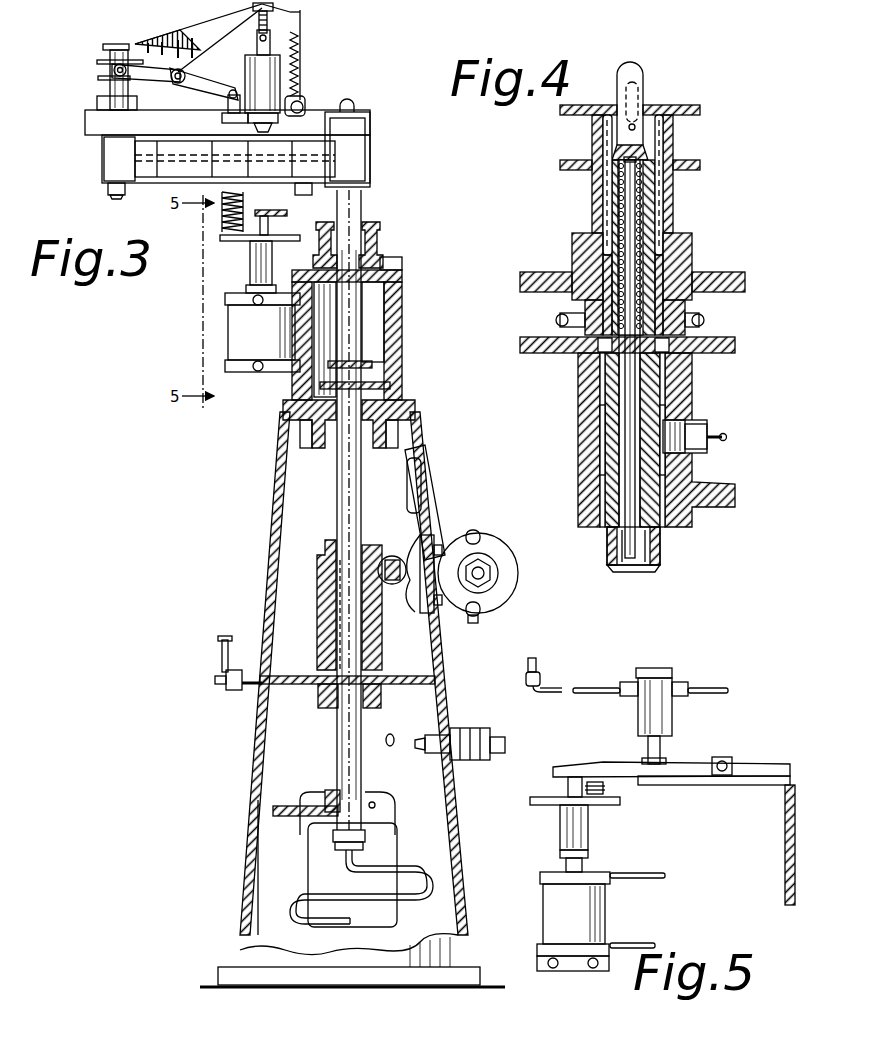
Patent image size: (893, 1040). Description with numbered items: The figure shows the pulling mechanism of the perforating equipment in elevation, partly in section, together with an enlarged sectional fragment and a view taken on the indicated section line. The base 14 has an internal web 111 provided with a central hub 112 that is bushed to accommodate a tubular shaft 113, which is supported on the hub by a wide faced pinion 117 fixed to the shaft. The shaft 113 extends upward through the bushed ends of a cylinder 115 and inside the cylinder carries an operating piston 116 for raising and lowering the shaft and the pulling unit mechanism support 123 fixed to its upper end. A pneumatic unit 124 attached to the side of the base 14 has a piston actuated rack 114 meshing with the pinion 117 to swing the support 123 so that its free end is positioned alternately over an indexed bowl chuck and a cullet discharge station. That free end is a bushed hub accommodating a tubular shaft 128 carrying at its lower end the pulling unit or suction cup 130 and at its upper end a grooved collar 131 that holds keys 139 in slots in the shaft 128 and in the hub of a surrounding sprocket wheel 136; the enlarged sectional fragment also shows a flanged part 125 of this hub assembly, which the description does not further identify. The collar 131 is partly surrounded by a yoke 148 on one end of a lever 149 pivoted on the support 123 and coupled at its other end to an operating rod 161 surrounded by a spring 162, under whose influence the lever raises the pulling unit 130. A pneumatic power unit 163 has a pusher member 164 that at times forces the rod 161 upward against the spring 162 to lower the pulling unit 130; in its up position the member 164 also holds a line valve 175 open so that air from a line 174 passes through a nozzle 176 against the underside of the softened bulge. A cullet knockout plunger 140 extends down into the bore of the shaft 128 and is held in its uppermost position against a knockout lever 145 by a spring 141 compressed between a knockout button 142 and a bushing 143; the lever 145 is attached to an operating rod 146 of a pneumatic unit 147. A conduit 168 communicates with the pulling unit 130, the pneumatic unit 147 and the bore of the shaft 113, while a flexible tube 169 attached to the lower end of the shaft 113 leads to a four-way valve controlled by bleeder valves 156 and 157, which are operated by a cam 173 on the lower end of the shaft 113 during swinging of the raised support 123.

In FIG. 3, the base 14 is at (232, 966).
In FIG. 3, the internal web 111 is at (300, 656).
In FIG. 3, the central hub 112 is at (320, 700).
In FIG. 3, the tubular shaft 113 is at (337, 494).
In FIG. 3, the piston actuated rack 114 is at (394, 556).
In FIG. 3, the cylinder 115 is at (392, 298).
In FIG. 3, the operating piston 116 is at (380, 365).
In FIG. 3, the wide faced pinion 117 is at (317, 619).
In FIG. 3, the pulling unit mechanism support 123 is at (345, 165).
In FIG. 3, the pneumatic unit 124 is at (510, 600).
In FIG. 4, the flange 125 is at (702, 276).
In FIG. 3, the tubular shaft 128 is at (105, 88).
In FIG. 4, the tubular shaft 128 is at (606, 440).
In FIG. 3, the pulling unit or suction cup 130 is at (110, 192).
In FIG. 4, the pulling unit or suction cup 130 is at (645, 568).
In FIG. 3, the grooved collar 131 is at (132, 80).
In FIG. 4, the grooved collar 131 is at (665, 108).
In FIG. 4, the sprocket wheel 136 is at (704, 320).
In FIG. 4, the keys 139 is at (604, 205).
In FIG. 4, the cullet knockout plunger 140 is at (636, 215).
In FIG. 4, the spring 141 is at (644, 195).
In FIG. 3, the knockout button 142 is at (104, 48).
In FIG. 4, the knockout button 142 is at (640, 68).
In FIG. 4, the bushing 143 is at (608, 322).
In FIG. 3, the knockout lever 145 is at (137, 26).
In FIG. 3, the operating rod 146 is at (262, 12).
In FIG. 3, the pneumatic unit 147 is at (270, 82).
In FIG. 3, the yoke 148 is at (104, 70).
In FIG. 3, the lever 149 is at (200, 78).
In FIG. 3, the bleeder valve 156 is at (390, 748).
In FIG. 3, the bleeder valve 157 is at (425, 738).
In FIG. 3, the operating rod 161 is at (228, 104).
In FIG. 3, the spring 162 is at (243, 214).
In FIG. 5, the spring 162 is at (602, 788).
In FIG. 3, the pneumatic power unit 163 is at (243, 333).
In FIG. 5, the pneumatic power unit 163 is at (575, 916).
In FIG. 3, the pusher member 164 is at (246, 244).
In FIG. 5, the pusher member 164 is at (540, 808).
In FIG. 3, the conduit 168 is at (175, 162).
In FIG. 4, the conduit 168 is at (712, 425).
In FIG. 3, the flexible tube 169 is at (372, 872).
In FIG. 3, the cam 173 is at (290, 817).
In FIG. 5, the line 174 is at (700, 694).
In FIG. 5, the line valve 175 is at (640, 712).
In FIG. 5, the nozzle 176 is at (540, 668).